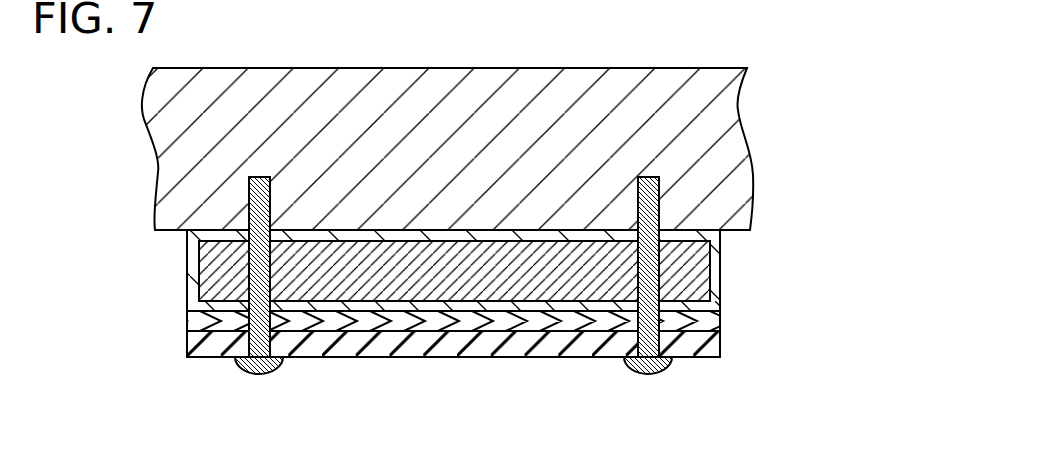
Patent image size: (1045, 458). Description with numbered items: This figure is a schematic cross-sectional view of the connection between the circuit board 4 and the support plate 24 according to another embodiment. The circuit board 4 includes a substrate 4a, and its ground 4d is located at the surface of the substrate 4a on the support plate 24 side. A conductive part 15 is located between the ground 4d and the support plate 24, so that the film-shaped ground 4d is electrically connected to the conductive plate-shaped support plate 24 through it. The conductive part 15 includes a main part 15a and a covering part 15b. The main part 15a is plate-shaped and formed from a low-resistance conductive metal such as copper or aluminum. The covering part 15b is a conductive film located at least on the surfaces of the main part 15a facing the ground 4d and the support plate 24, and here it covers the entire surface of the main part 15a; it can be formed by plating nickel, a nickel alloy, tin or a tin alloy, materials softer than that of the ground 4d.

The support plate 24 is at (703, 135).
The conductive part 15 is at (529, 270).
The main part 15a is at (687, 262).
The covering part 15b is at (713, 282).
The ground 4d is at (700, 323).
The substrate 4a is at (708, 355).
The circuit board 4 is at (480, 317).